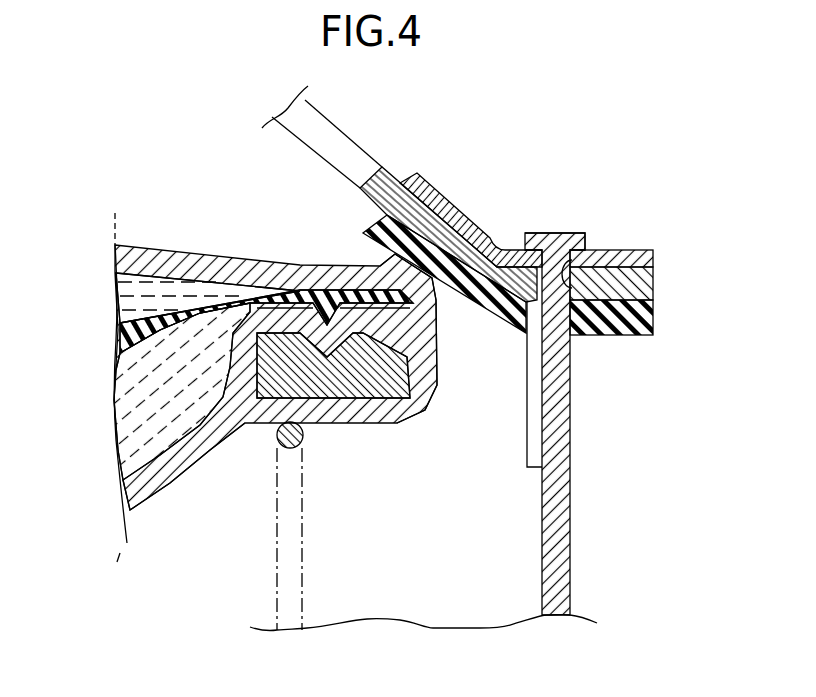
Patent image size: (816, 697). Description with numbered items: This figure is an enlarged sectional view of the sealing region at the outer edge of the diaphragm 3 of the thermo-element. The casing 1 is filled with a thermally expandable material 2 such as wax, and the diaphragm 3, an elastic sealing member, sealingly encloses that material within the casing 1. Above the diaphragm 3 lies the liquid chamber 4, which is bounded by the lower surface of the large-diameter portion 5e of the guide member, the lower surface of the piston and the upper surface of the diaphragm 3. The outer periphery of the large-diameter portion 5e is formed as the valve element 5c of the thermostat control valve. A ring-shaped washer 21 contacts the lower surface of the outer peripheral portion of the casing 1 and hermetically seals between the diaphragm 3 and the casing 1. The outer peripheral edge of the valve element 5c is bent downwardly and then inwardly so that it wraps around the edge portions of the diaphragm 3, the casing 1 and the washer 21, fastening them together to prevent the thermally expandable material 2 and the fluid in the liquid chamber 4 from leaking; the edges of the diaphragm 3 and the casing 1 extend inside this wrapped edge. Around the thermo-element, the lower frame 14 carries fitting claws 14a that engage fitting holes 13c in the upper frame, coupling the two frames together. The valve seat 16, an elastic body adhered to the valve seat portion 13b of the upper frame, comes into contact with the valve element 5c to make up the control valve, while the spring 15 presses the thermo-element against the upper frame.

The casing 1 is at (162, 472).
The thermally expandable material 2 is at (133, 425).
The diaphragm 3 is at (133, 340).
The liquid chamber 4 is at (137, 303).
The large-diameter portion 5e is at (180, 258).
The valve element 5c is at (437, 330).
The washer 21 is at (363, 373).
The valve seat 16 is at (432, 265).
The valve seat portion 13b is at (472, 262).
The fitting holes 13c is at (573, 255).
The lower frame 14 is at (562, 590).
The fitting claws 14a is at (563, 243).
The spring 15 is at (302, 573).